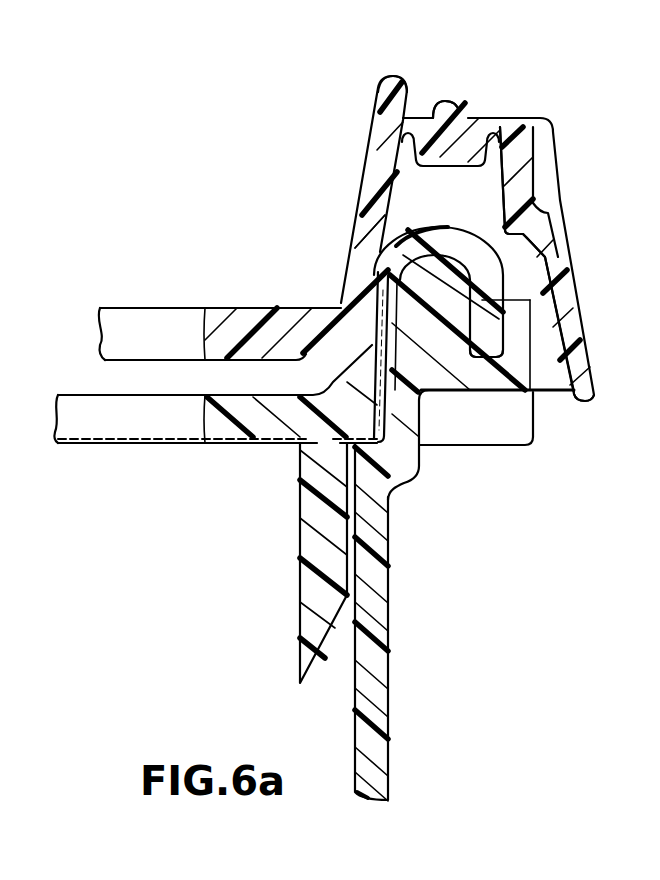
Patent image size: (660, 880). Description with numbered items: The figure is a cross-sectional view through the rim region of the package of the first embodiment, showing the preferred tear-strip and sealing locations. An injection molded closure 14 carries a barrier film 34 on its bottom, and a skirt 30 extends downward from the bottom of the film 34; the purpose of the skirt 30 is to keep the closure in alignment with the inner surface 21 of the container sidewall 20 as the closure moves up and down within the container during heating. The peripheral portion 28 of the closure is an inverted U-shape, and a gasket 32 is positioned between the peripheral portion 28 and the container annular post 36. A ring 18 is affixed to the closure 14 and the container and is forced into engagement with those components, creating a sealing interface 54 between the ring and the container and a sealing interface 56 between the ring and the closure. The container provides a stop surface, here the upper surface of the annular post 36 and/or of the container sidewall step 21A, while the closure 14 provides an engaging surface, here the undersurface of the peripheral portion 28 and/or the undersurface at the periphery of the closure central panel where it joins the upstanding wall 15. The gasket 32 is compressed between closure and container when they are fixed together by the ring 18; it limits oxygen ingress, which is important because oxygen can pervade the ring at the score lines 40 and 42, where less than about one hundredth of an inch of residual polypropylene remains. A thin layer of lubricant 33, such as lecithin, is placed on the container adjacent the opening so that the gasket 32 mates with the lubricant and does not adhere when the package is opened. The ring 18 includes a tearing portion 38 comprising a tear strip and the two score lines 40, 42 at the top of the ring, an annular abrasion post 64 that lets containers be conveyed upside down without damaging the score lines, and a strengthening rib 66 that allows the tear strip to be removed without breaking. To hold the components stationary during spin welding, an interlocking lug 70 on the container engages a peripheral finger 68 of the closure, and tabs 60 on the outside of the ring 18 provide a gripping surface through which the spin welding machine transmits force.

The closure 14 is at (310, 380).
The upstanding wall 15 is at (352, 335).
The ring 18 is at (362, 138).
The container sidewall 20 is at (380, 667).
The inner surface 21 is at (345, 714).
The container sidewall step 21A is at (390, 504).
The peripheral portion 28 is at (443, 236).
The skirt 30 is at (325, 546).
The gasket 32 is at (358, 224).
The lubricant 33 is at (530, 300).
The barrier film 34 is at (187, 447).
The container annular post 36 is at (540, 252).
The tearing portion 38 is at (473, 117).
The score line 40 is at (518, 118).
The score line 42 is at (421, 112).
The interface 54 is at (583, 318).
The interface 56 is at (360, 276).
The tabs 60 is at (468, 425).
The annular abrasion post 64 is at (393, 77).
The strengthening rib 66 is at (462, 101).
The peripheral finger 68 is at (486, 358).
The interlocking lug 70 is at (517, 337).